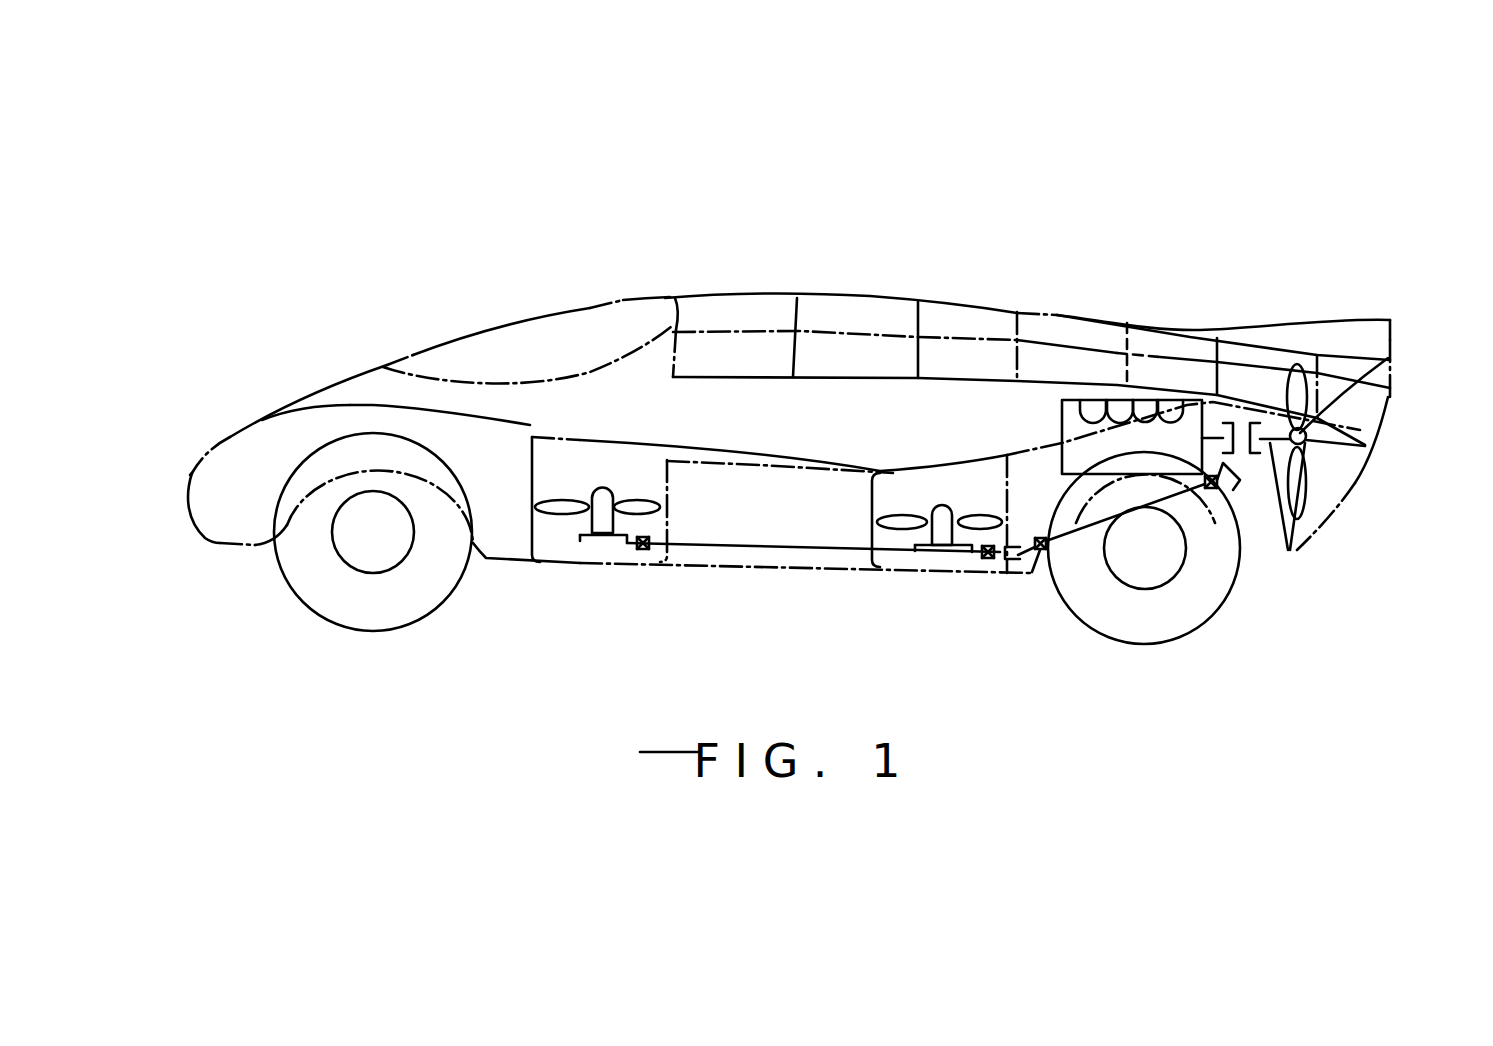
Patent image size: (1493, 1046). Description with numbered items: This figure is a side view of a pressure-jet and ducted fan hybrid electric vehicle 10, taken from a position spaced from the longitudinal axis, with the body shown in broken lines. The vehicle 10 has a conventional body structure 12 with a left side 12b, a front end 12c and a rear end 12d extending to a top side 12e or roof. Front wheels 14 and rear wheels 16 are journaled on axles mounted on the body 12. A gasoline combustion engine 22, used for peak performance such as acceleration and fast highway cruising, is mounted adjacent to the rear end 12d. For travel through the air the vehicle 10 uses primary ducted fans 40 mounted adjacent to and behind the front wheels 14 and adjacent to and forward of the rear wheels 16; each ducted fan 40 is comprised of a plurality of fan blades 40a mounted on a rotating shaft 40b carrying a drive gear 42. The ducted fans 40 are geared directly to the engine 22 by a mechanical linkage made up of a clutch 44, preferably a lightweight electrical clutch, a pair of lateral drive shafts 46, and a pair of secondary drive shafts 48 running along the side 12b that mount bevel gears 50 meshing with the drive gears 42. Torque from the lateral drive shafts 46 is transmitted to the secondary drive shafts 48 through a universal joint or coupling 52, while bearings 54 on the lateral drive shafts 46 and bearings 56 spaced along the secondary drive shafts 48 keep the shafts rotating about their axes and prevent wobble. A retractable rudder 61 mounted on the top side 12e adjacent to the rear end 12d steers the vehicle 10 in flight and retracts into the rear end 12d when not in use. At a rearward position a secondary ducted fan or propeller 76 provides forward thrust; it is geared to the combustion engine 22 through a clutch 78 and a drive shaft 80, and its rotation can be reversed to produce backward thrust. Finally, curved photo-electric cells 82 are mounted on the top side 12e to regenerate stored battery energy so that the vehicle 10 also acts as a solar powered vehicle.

The pressure-jet and ducted fan hybrid electric vehicle 10 is at (1396, 233).
The body structure 12 is at (540, 385).
The left side 12b is at (787, 470).
The front end 12c is at (187, 500).
The rear end 12d is at (1393, 387).
The top side 12e is at (745, 285).
The front wheels 14 is at (322, 618).
The rear wheels 16 is at (1147, 623).
The combustion engine 22 is at (1143, 433).
The primary ducted fans 40 is at (608, 480).
The fan blades 40a is at (558, 493).
The rotating shaft 40b is at (583, 493).
The drive gear 42 is at (577, 547).
The clutch 44 is at (1240, 487).
The lateral drive shafts 46 is at (1080, 565).
The secondary drive shafts 48 is at (700, 545).
The bevel gears 50 is at (625, 544).
The universal joint or coupling 52 is at (1017, 562).
The bearings 54 is at (1038, 537).
The bearings 56 is at (643, 549).
The retractable rudder 61 is at (1377, 338).
The secondary ducted fan or propeller 76 is at (1390, 357).
The clutch 78 is at (1245, 423).
The drive shaft 80 is at (1290, 550).
The photo-electric cells 82 is at (860, 322).